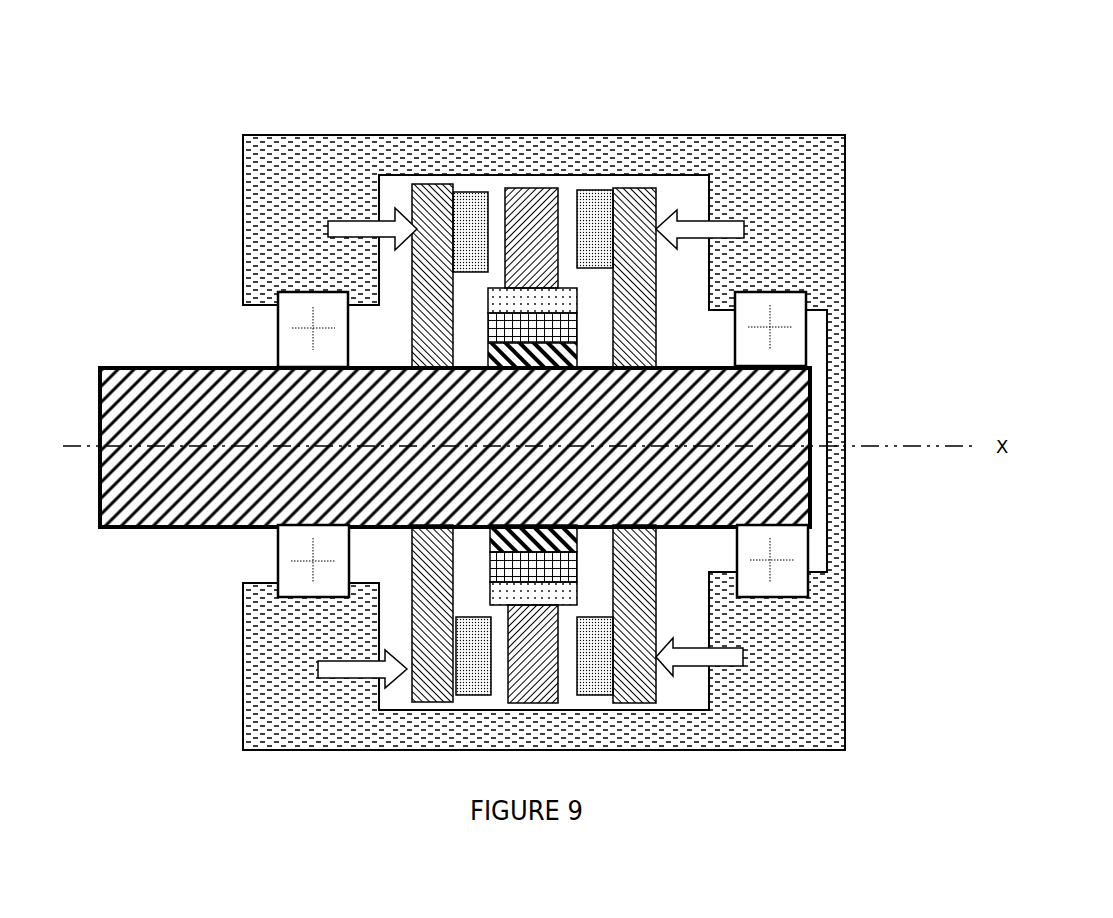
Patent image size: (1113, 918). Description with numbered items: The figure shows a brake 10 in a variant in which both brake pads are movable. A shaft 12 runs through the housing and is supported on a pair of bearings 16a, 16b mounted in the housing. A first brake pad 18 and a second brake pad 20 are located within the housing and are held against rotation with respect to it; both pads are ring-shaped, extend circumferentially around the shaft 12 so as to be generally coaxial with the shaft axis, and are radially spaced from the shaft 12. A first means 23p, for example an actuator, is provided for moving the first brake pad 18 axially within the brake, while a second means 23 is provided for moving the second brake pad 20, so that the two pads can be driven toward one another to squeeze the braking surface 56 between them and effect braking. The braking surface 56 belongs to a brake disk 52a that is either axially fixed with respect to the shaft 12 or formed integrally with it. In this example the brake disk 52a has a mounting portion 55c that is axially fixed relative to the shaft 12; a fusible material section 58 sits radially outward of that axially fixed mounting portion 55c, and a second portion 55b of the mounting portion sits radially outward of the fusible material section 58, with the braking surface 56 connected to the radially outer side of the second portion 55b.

The brake 10 is at (1018, 115).
The shaft 12 is at (235, 412).
The bearing 16a is at (300, 567).
The bearing 16b is at (773, 565).
The first brake pad 18 is at (430, 183).
The second brake pad 20 is at (628, 197).
The second means 23 is at (678, 660).
The first means 23p is at (330, 677).
The brake disk 52a is at (525, 227).
The second portion of the mounting portion 55b is at (540, 296).
The mounting portion 55c is at (578, 350).
The braking surface 56 is at (556, 238).
The fusible material section 58 is at (503, 566).